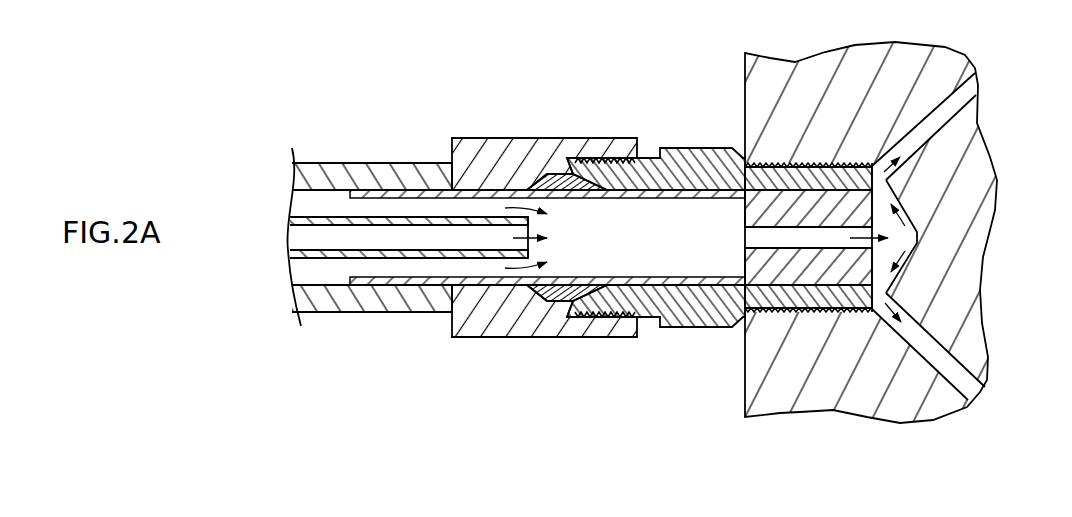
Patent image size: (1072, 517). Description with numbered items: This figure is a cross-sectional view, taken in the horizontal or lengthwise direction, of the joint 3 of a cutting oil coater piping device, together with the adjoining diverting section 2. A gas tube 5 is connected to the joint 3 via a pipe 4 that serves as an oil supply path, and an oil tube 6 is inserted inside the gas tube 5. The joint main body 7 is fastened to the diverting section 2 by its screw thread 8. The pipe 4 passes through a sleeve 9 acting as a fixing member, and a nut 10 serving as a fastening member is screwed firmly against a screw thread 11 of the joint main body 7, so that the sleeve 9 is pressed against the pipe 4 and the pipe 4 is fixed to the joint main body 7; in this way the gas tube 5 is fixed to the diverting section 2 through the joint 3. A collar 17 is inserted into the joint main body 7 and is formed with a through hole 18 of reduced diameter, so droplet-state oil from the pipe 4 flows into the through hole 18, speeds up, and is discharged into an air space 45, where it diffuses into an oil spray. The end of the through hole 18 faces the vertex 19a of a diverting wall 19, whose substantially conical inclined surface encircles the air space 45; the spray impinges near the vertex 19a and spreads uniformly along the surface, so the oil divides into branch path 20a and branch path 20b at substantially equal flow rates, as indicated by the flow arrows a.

The diverting section 2 is at (745, 68).
The joint 3 is at (579, 206).
The pipe 4 is at (660, 192).
The gas tube 5 is at (325, 163).
The oil tube 6 is at (369, 259).
The joint main body 7 is at (693, 148).
The screw thread 8 is at (773, 164).
The sleeve 9 is at (562, 176).
The nut 10 is at (506, 138).
The screw thread 11 is at (610, 165).
The collar 17 is at (783, 300).
The through hole 18 is at (826, 262).
The diverting wall 19 is at (880, 305).
The vertex 19a is at (922, 237).
The branch path 20a is at (935, 122).
The branch path 20b is at (937, 353).
The air space 45 is at (852, 168).
The fluid flow a is at (913, 276).